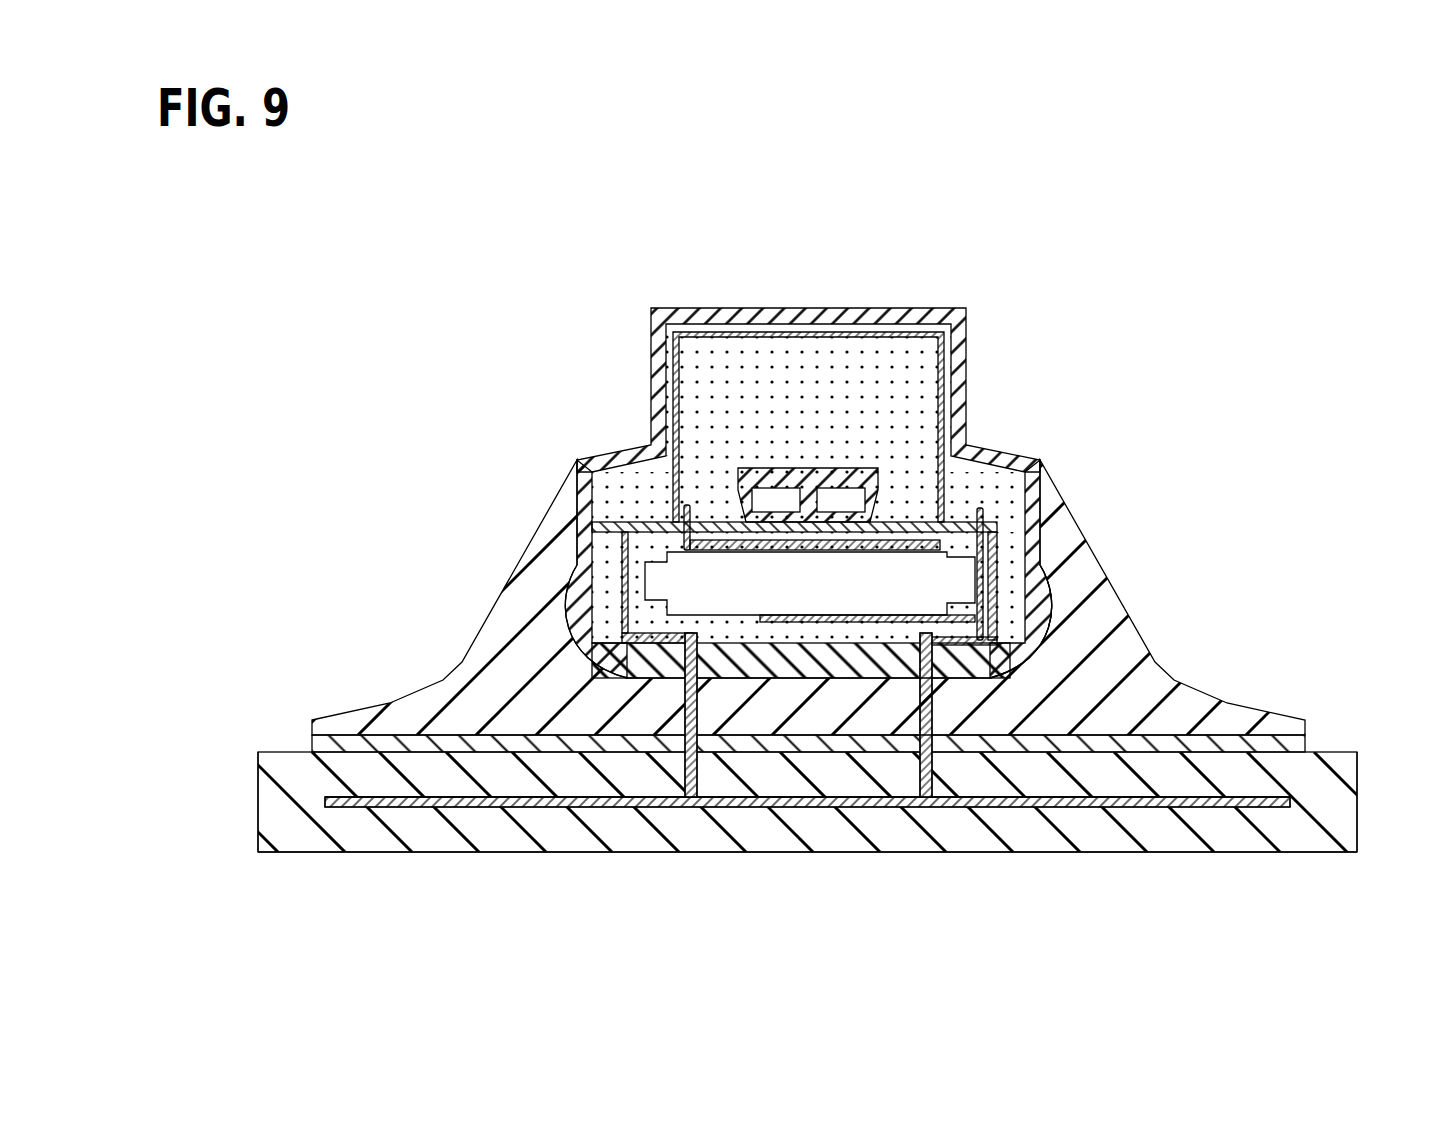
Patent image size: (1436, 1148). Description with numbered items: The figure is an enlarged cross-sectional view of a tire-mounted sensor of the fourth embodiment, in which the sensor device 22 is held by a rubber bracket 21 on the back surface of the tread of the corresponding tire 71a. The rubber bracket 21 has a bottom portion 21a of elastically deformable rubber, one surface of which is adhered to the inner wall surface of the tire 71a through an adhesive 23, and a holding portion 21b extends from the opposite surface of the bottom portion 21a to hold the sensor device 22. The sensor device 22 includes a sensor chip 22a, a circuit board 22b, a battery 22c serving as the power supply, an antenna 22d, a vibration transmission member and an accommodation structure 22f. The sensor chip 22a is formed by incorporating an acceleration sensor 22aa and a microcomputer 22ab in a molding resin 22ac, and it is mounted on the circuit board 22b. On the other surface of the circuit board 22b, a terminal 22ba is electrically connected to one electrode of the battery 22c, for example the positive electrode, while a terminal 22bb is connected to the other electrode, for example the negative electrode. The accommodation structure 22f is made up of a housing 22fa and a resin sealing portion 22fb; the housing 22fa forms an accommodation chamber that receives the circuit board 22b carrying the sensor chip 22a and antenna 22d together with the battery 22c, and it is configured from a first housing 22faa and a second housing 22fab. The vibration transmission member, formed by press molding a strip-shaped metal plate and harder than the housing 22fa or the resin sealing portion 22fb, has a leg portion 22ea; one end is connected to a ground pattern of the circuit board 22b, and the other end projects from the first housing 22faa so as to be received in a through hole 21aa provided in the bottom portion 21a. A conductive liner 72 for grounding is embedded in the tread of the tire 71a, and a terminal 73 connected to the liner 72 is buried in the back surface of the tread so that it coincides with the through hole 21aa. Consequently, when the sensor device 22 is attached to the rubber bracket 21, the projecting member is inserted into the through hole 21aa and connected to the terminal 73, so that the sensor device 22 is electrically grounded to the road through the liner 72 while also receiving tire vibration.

The rubber bracket 21 is at (749, 689).
The bottom portion 21a is at (1180, 695).
The holding portion 21b is at (1058, 532).
The through hole 21aa is at (700, 735).
The sensor device 22 is at (898, 606).
The sensor chip 22a is at (909, 424).
The acceleration sensor 22aa is at (773, 488).
The microcomputer 22ab is at (833, 486).
The molding resin 22ac is at (864, 476).
The circuit board 22b is at (1023, 495).
The terminal 22ba is at (745, 535).
The terminal 22bb is at (965, 618).
The battery 22c is at (848, 598).
The antenna 22d is at (943, 422).
The leg portion 22ea is at (643, 620).
The accommodation structure 22f is at (1015, 576).
The housing 22fa is at (1047, 596).
The second housing 22fab is at (1035, 558).
The first housing 22faa is at (1037, 632).
The resin sealing portion 22fb is at (1015, 557).
The adhesive 23 is at (1298, 741).
The tire 71a is at (1170, 835).
The liner 72 is at (527, 798).
The terminal 73 is at (672, 783).